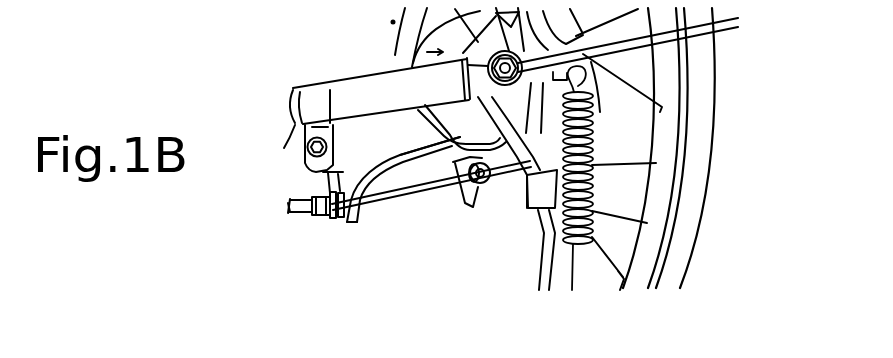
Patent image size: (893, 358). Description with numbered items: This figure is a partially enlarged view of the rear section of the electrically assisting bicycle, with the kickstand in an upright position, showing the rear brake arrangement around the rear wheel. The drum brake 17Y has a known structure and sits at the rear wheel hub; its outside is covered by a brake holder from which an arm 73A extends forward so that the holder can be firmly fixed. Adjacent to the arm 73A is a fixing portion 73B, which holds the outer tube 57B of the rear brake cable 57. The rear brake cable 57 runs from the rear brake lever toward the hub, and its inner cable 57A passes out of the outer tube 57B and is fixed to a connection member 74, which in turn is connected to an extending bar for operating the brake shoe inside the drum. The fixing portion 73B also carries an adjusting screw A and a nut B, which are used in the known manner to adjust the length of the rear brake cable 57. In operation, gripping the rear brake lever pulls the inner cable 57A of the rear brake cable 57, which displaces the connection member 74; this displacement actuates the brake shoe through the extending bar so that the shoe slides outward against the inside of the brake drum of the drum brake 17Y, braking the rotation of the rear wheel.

The drum brake 17Y is at (412, 62).
The rear brake cable 57 is at (303, 216).
The inner cable 57A is at (408, 190).
The outer tube 57B is at (320, 280).
The arm 73A is at (388, 147).
The fixing portion 73B is at (348, 222).
The connection member 74 is at (482, 188).
The adjusting screw A is at (314, 220).
The nut B is at (335, 220).